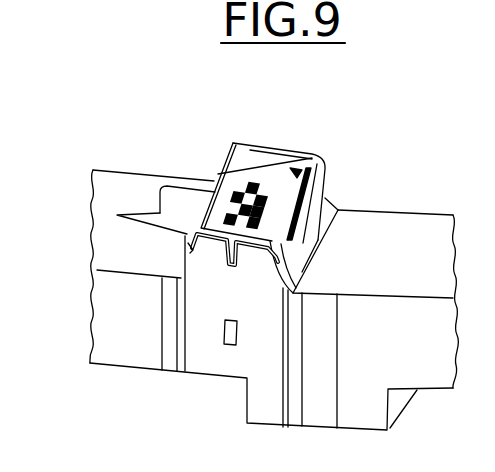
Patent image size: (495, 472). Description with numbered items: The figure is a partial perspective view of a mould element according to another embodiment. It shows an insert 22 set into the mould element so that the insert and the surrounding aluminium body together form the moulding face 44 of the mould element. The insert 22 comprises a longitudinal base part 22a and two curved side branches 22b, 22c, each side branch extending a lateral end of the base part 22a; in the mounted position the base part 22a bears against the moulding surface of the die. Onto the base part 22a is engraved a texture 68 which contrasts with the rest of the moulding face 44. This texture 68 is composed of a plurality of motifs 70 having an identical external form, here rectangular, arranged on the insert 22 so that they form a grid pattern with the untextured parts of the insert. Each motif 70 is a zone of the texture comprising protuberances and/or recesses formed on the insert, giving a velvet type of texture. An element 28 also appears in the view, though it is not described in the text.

The insert 22 is at (311, 155).
The base part 22a is at (250, 144).
The side branch 22b is at (188, 235).
The side branch 22c is at (325, 198).
The opening 28 is at (232, 349).
The moulding face 44 is at (410, 224).
The texture 68 is at (216, 176).
The motifs 70 is at (266, 185).